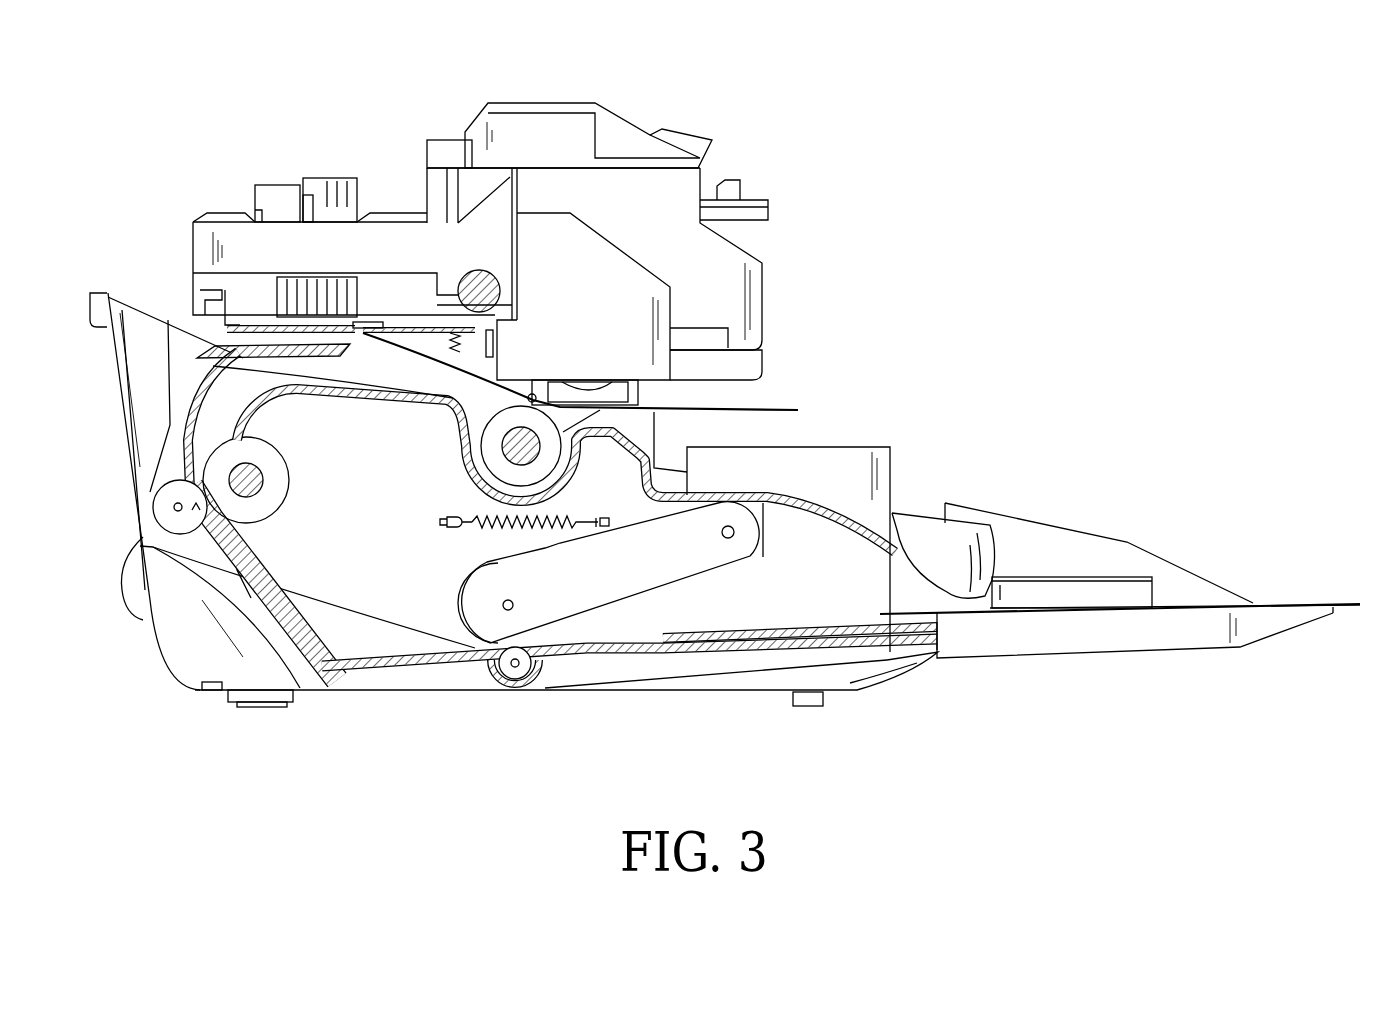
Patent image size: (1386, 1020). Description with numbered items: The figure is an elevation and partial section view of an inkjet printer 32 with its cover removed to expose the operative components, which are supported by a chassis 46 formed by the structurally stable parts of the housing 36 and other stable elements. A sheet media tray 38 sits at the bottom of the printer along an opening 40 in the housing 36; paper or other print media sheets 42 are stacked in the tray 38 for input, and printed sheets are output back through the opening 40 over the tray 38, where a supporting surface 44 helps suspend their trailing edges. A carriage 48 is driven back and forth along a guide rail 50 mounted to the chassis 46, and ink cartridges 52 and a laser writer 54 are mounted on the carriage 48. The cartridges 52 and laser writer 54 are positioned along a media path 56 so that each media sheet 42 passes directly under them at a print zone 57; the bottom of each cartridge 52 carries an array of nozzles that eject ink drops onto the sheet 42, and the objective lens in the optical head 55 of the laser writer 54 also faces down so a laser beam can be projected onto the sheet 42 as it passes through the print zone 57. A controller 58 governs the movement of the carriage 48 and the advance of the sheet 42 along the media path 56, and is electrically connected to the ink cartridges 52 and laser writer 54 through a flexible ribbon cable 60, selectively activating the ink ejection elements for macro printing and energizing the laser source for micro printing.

The inkjet printer 32 is at (170, 115).
The housing 36 is at (137, 348).
The sheet media tray 38 is at (1138, 630).
The opening 40 is at (1028, 598).
The print media sheets 42 is at (353, 620).
The supporting surface 44 is at (838, 512).
The chassis 46 is at (300, 353).
The carriage 48 is at (752, 298).
The guide rail 50 is at (470, 276).
The ink cartridges 52 is at (748, 363).
The laser writer 54 is at (624, 278).
The optical head 55 is at (590, 383).
The media path 56 is at (746, 428).
The print zone 57 is at (600, 408).
The controller 58 is at (263, 185).
The flexible ribbon cable 60 is at (334, 180).